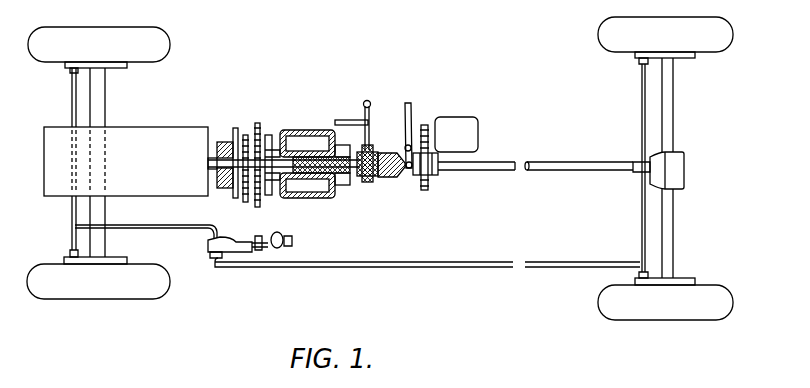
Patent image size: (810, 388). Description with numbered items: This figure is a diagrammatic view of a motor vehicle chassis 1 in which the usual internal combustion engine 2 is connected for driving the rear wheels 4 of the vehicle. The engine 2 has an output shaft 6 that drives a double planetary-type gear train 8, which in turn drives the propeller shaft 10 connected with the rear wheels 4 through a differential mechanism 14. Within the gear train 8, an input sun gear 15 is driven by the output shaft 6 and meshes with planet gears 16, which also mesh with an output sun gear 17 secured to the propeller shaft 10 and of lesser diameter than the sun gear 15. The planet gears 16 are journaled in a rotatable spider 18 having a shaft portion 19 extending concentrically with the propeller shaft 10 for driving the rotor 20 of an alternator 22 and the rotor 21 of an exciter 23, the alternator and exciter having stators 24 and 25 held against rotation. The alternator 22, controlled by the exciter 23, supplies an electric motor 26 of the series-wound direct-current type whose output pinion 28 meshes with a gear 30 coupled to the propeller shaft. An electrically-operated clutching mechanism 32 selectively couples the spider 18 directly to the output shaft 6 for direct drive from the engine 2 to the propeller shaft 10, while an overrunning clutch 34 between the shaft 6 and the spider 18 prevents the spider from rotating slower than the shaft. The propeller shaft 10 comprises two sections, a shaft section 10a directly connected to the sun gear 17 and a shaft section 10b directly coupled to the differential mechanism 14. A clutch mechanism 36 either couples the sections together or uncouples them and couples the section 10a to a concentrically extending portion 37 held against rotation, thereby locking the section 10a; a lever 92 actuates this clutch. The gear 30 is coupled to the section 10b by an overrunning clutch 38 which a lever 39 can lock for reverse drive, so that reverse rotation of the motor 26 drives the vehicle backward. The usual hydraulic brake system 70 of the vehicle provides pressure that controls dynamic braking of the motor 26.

The motor vehicle chassis 1 is at (493, 107).
The internal combustion engine 2 is at (117, 128).
The rear wheels 4 is at (720, 45).
The output shaft 6 is at (215, 165).
The double planetary-type gear train 8 is at (287, 161).
The propeller shaft 10 is at (488, 155).
The shaft section 10a is at (390, 151).
The shaft section 10b is at (518, 162).
The differential mechanism 14 is at (685, 162).
The input sun gear 15 is at (232, 193).
The planet gears 16 is at (258, 122).
The output sun gear 17 is at (272, 197).
The rotatable spider 18 is at (272, 133).
The shaft portion 19 is at (317, 132).
The rotor 20 is at (303, 200).
The rotor 21 is at (346, 185).
The alternator 22 is at (301, 128).
The exciter 23 is at (330, 122).
The stator 24 is at (280, 231).
The stator 25 is at (325, 201).
The electric motor 26 is at (455, 118).
The output pinion 28 is at (425, 125).
The gear 30 is at (418, 177).
The electrically-operated clutching mechanism 32 is at (226, 142).
The overrunning clutch 34 is at (213, 160).
The clutch mechanism 36 is at (390, 186).
The concentrically extending portion 37 is at (360, 151).
The overrunning clutch 38 is at (409, 172).
The lever 39 is at (408, 104).
The hydraulic brake system 70 is at (345, 268).
The lever 92 is at (368, 100).